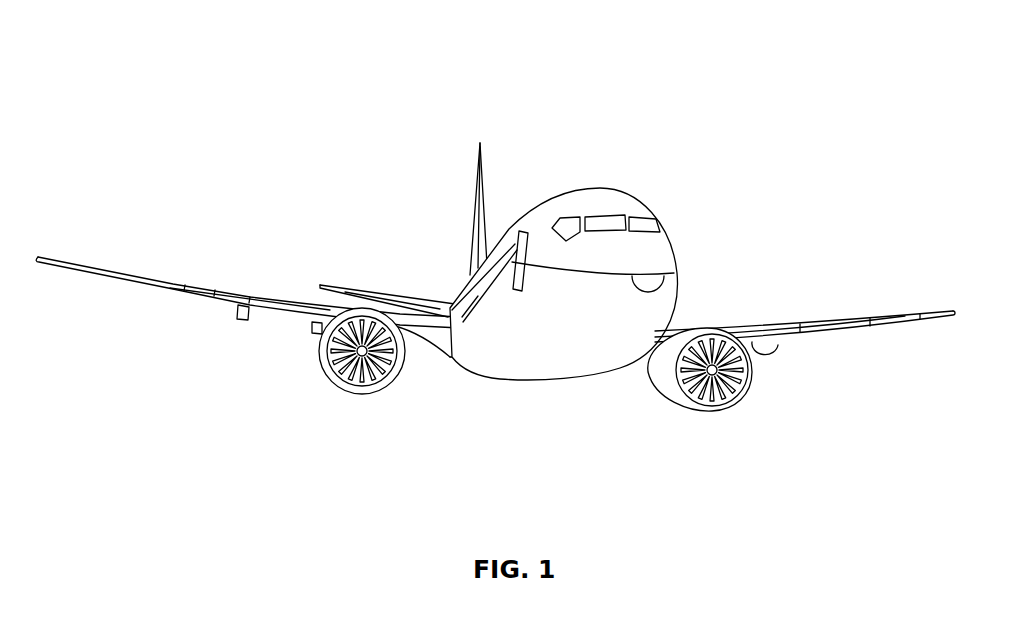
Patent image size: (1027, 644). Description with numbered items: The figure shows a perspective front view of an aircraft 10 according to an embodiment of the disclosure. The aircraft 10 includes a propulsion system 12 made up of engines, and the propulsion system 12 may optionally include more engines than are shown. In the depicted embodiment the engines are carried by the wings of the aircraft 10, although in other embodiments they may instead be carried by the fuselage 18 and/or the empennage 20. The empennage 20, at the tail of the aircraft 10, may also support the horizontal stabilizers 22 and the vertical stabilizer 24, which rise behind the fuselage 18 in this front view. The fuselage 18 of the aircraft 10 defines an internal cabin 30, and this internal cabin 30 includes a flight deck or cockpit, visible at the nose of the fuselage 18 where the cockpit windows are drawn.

The aircraft 10 is at (270, 99).
The propulsion system 12 is at (226, 403).
The fuselage 18 is at (675, 244).
The empennage 20 is at (468, 270).
The horizontal stabilizers 22 is at (352, 285).
The vertical stabilizer 24 is at (476, 180).
The internal cabin 30 is at (612, 215).